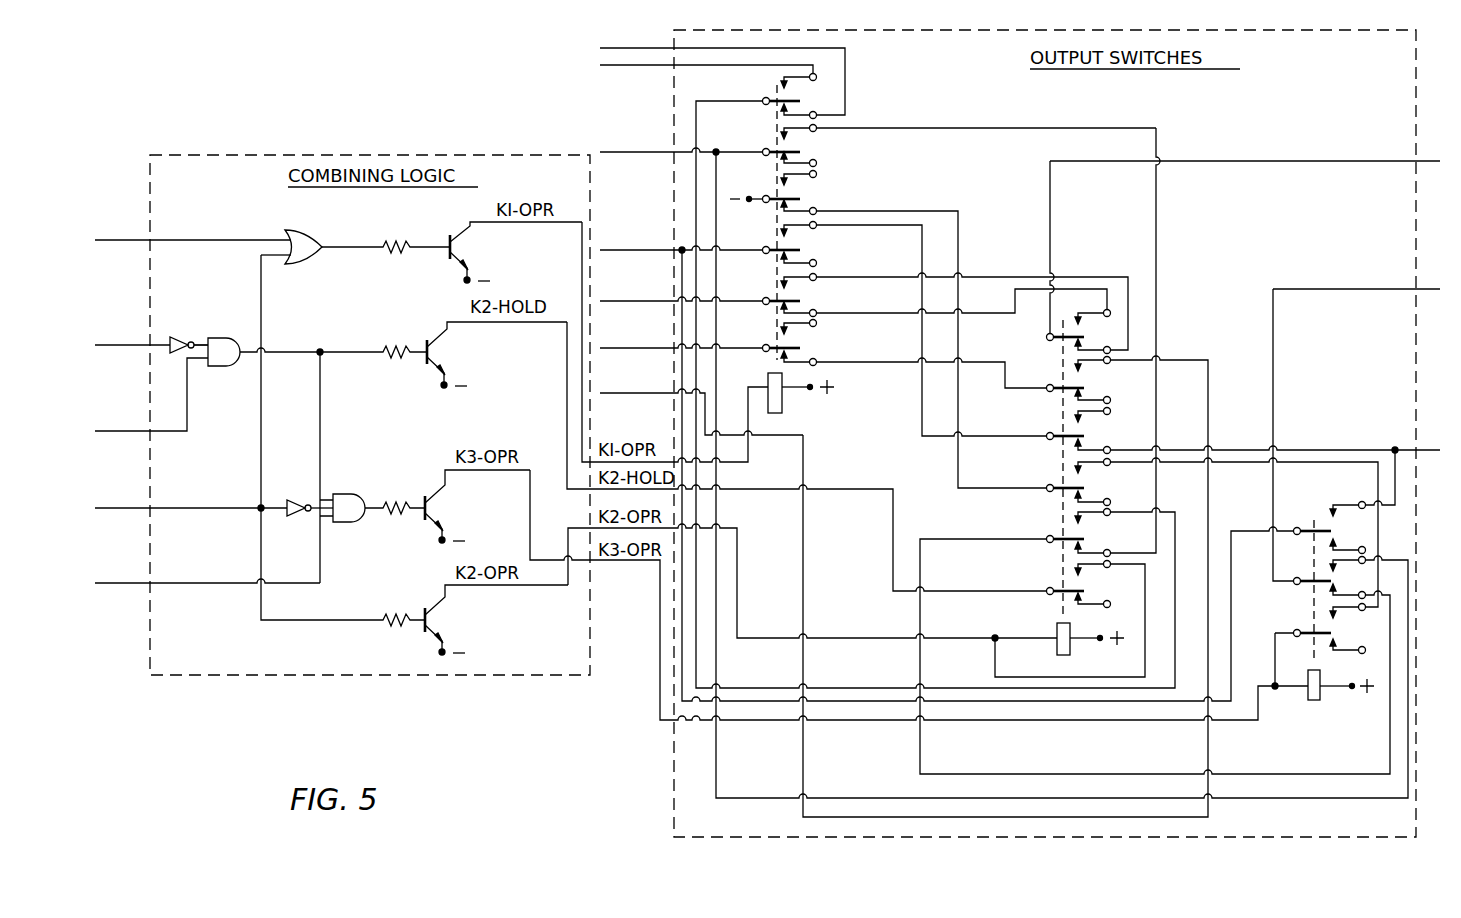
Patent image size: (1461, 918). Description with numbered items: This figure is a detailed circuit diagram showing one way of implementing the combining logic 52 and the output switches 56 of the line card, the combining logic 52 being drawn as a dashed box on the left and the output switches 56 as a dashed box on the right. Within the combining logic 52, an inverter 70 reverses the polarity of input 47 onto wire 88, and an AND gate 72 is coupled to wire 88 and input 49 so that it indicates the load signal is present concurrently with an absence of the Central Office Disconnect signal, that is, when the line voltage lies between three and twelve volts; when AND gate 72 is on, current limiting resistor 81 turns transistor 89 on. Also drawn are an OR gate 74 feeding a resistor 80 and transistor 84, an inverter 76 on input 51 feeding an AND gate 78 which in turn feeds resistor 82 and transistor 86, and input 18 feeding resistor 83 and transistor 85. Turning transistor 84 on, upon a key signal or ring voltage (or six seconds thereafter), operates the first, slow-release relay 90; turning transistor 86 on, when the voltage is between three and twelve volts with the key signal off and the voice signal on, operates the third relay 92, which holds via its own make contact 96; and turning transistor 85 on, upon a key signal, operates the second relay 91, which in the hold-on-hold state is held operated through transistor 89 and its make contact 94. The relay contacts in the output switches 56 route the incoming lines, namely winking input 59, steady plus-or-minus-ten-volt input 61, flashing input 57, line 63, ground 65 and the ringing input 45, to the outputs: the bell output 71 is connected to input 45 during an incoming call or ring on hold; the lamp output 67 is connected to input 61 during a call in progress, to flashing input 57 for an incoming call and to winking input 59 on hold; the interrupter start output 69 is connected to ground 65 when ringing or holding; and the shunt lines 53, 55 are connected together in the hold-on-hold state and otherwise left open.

The RN or ± 105V input 45 is at (139, 239).
The input 47 is at (139, 344).
The input 49 is at (139, 430).
The input line 51 is at (137, 507).
The input line 18 is at (137, 582).
The winking input 59 is at (636, 47).
The ± 10V (steady) input 61 is at (636, 66).
The flashing input 57 is at (655, 151).
The line 63 is at (661, 249).
The ground 65 is at (661, 300).
The shunt 53 is at (661, 347).
The shunt 55 is at (661, 392).
The inverter 70 is at (184, 338).
The wire 88 is at (210, 334).
The AND gate 72 is at (244, 370).
The OR gate 74 is at (317, 236).
The resistor 80 is at (406, 243).
The transistor 84 is at (454, 234).
The transistor 89 is at (436, 328).
The current limiting resistor 81 is at (392, 346).
The AND gate 78 is at (368, 488).
The resistor 82 is at (404, 501).
The transistor 86 is at (464, 440).
The transistor 85 is at (444, 581).
The resistor 83 is at (402, 613).
The inverter 76 is at (298, 516).
The relay K1 90 is at (764, 384).
The relay K2 91 is at (1052, 630).
The make contact of K2 94 is at (1110, 568).
The relay K3 92 is at (1320, 684).
The make contact of K3 96 is at (1369, 610).
The ST (interrupter start) output 69 is at (1432, 163).
The L (lamp) output 67 is at (1432, 291).
The Bl (bell) output 71 is at (1432, 452).
The combining logic 52 is at (500, 678).
The output switches 56 is at (876, 843).